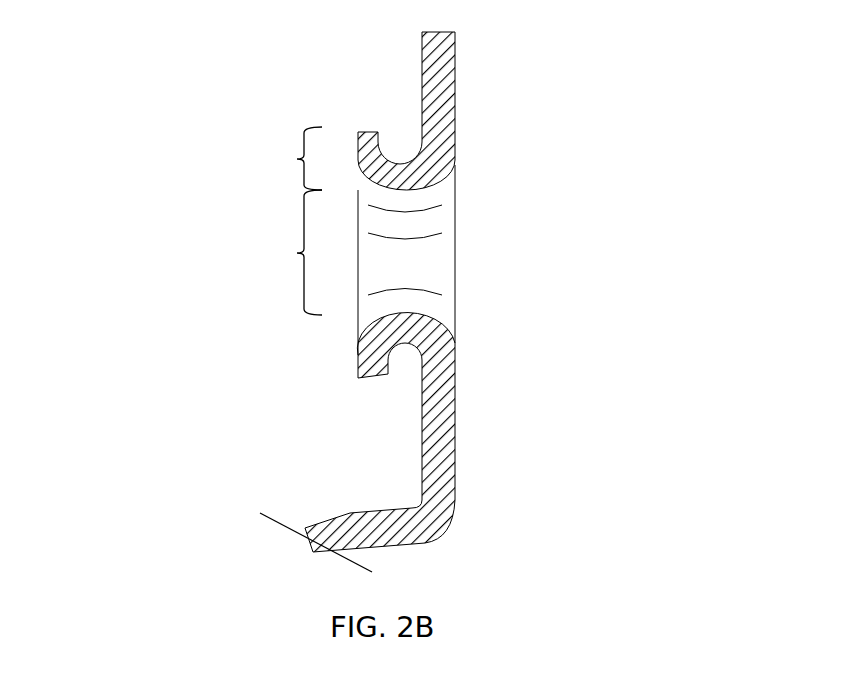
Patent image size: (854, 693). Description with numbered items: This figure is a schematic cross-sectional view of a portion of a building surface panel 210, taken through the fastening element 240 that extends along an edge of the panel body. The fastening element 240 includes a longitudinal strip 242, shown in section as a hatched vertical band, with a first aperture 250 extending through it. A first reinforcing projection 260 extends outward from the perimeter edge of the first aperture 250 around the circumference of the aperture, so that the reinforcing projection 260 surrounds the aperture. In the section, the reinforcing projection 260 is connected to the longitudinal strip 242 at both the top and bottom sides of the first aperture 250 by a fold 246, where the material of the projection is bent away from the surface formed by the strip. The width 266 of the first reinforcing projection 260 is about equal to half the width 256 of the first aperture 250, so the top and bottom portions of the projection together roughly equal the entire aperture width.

The building surface panel 210 is at (594, 133).
The fastening element 240 is at (168, 325).
The longitudinal strip 242 is at (453, 464).
The fold 246 is at (405, 177).
The first aperture 250 is at (420, 262).
The width of first aperture 256 is at (297, 253).
The first reinforcing projection 260 is at (368, 152).
The width of first reinforcing projection 266 is at (297, 159).